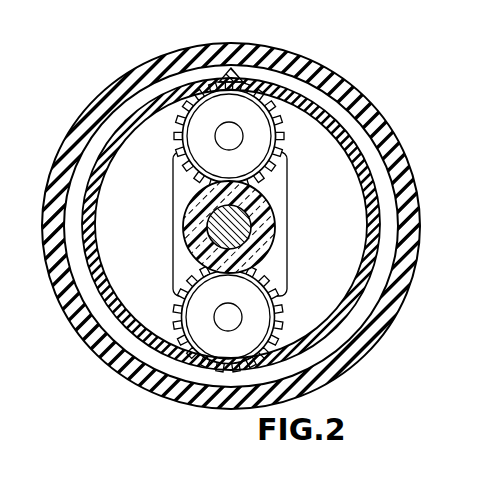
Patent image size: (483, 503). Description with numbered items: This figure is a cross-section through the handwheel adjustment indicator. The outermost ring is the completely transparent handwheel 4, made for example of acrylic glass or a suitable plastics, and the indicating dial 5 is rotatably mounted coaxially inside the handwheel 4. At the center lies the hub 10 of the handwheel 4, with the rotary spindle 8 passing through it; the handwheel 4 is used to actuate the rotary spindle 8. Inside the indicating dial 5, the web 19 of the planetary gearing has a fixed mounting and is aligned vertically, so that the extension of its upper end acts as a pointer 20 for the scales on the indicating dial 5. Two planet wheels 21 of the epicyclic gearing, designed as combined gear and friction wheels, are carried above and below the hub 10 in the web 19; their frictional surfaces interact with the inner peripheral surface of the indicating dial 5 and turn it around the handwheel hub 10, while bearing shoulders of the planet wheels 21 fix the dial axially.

The handwheel 4 is at (377, 330).
The indicating dial 5 is at (313, 345).
The rotary spindle 8 is at (248, 233).
The hub 10 is at (268, 207).
The web 19 is at (277, 173).
The pointer 20 is at (233, 73).
The planet wheels 21 is at (249, 121).